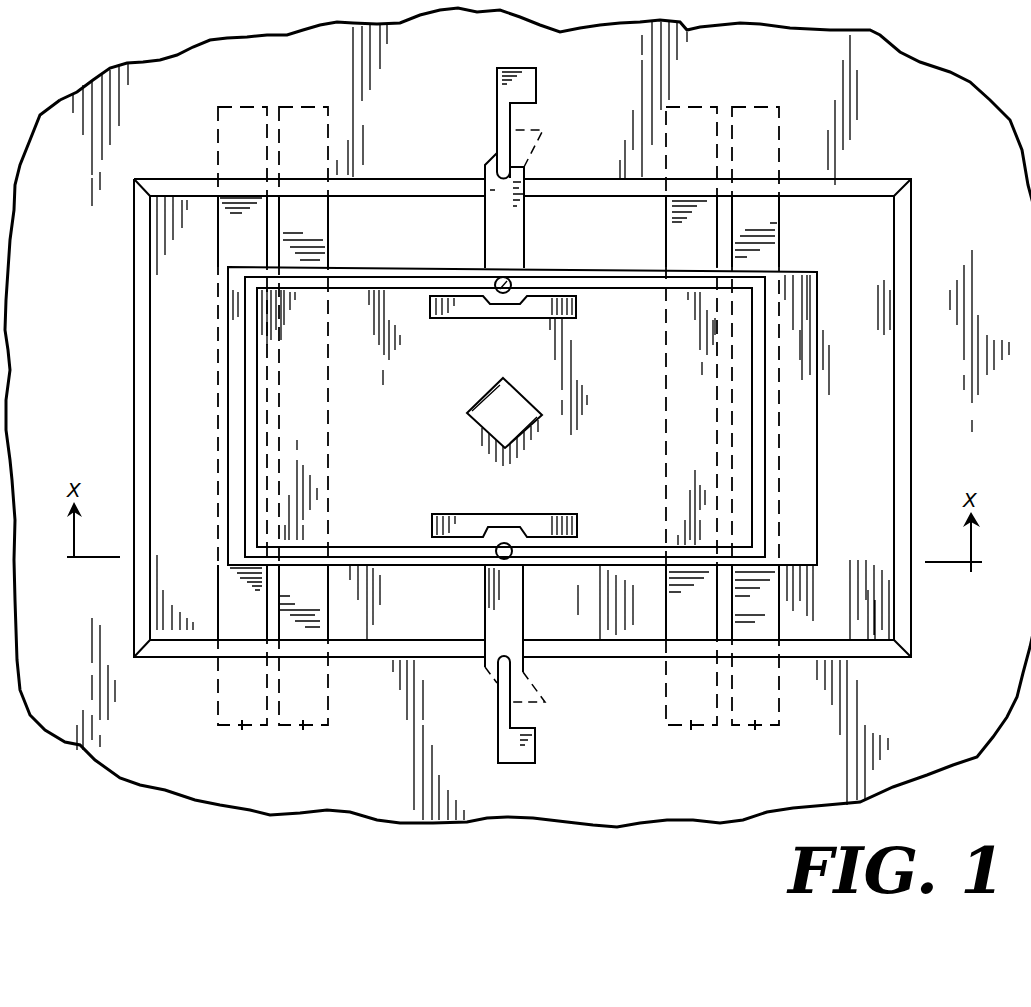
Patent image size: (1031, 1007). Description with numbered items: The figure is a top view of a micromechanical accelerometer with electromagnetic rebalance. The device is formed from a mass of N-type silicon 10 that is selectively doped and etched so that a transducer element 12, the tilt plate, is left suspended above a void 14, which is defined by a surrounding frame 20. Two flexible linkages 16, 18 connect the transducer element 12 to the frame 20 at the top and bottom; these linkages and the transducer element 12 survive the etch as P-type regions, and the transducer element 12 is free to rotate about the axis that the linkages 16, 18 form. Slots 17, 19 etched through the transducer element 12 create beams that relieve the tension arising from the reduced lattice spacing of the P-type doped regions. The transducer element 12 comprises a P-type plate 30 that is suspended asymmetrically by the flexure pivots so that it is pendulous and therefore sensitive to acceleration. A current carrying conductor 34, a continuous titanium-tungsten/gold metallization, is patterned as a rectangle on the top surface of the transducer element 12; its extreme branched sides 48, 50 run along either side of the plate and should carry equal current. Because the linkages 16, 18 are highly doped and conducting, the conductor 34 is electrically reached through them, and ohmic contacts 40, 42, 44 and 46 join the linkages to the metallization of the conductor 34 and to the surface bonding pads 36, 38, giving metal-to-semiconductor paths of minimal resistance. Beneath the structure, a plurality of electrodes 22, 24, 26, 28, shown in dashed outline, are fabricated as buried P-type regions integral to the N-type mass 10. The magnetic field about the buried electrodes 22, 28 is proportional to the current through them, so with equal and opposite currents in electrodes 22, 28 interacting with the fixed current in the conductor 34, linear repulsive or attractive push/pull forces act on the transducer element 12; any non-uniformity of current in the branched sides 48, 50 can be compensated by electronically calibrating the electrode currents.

The mass of N-type silicon 10 is at (907, 117).
The transducer element 12 is at (599, 268).
The void 14 is at (871, 422).
The flexible linkage 16 is at (485, 220).
The slot 17 is at (545, 513).
The flexible linkage 18 is at (485, 590).
The slot 19 is at (480, 320).
The frame 20 is at (437, 178).
The electrode 22 is at (243, 730).
The electrode 24 is at (303, 730).
The electrode 26 is at (691, 730).
The electrode 28 is at (755, 730).
The P-type plate 30 is at (404, 422).
The current carrying conductor 34 is at (641, 291).
The surface bonding pad 36 is at (535, 750).
The surface bonding pad 38 is at (523, 86).
The ohmic contact 40 is at (508, 278).
The ohmic contact 42 is at (506, 559).
The ohmic contact 44 is at (523, 662).
The ohmic contact 46 is at (522, 172).
The branched side of current carrying conductor 48 is at (245, 375).
The branched side of current carrying conductor 50 is at (767, 362).